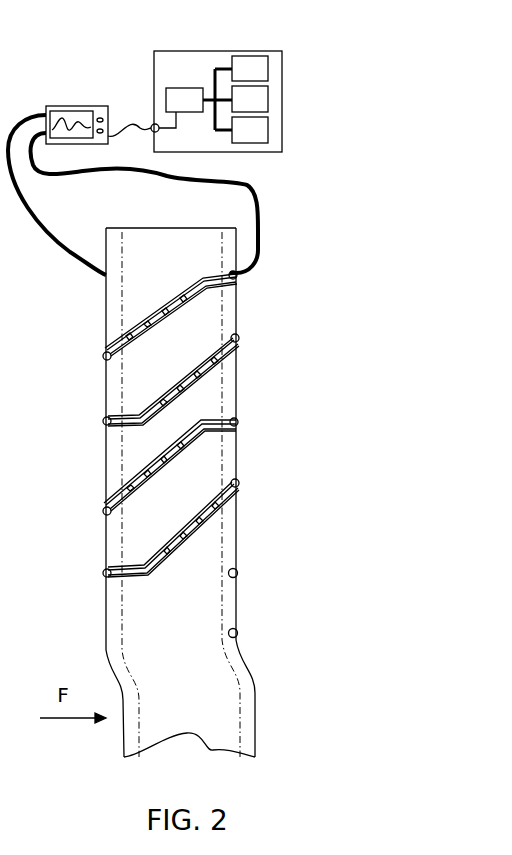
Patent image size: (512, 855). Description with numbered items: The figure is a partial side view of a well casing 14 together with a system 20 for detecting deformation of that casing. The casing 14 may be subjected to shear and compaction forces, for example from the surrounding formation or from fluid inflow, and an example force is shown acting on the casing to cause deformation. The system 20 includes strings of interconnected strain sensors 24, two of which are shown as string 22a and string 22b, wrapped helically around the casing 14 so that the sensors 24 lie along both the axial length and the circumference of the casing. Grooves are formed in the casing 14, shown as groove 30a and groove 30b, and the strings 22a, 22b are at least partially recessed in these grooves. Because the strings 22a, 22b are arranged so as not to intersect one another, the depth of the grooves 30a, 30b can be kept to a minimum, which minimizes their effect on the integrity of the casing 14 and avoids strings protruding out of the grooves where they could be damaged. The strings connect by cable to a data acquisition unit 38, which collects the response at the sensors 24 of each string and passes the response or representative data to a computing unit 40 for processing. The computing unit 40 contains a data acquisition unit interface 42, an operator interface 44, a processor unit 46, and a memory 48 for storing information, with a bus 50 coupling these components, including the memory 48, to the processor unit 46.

The casing 14 is at (171, 227).
The system for detecting deformation 20 is at (176, 430).
The string 22a is at (157, 322).
The string 22b is at (160, 384).
The strain sensors 24 is at (163, 460).
The groove 30a is at (152, 332).
The groove 30b is at (112, 284).
The data acquisition unit 38 is at (70, 78).
The computing unit 40 is at (218, 79).
The data acquisition unit interface 42 is at (195, 108).
The operator interface 44 is at (261, 76).
The processor unit 46 is at (261, 107).
The memory 48 is at (261, 138).
The bus 50 is at (213, 76).